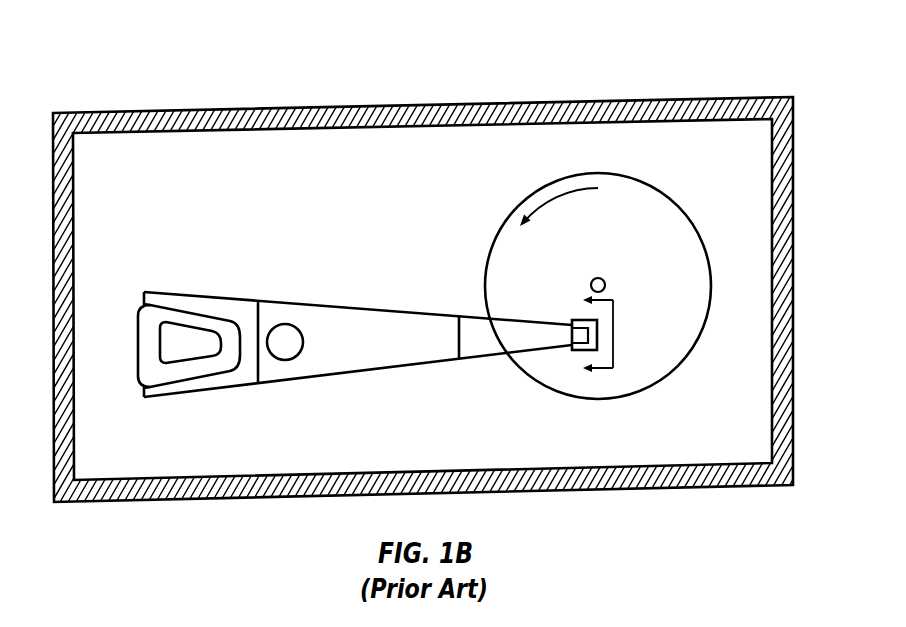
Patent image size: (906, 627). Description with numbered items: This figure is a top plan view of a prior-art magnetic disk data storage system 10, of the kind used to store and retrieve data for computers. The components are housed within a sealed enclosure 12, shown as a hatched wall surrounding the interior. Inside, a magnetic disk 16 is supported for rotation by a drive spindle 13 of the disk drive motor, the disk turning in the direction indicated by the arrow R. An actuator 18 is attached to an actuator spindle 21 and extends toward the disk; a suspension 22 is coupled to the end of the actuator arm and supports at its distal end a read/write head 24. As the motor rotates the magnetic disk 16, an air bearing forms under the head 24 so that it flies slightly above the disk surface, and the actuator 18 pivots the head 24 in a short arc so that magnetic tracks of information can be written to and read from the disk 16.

The magnetic disk data storage system 10 is at (727, 90).
The sealed enclosure 12 is at (794, 286).
The drive spindle 13 is at (605, 285).
The magnetic disk 16 is at (706, 285).
The actuator 18 is at (360, 373).
The actuator spindle 21 is at (290, 338).
The suspension 22 is at (473, 348).
The read/write head 24 is at (597, 335).